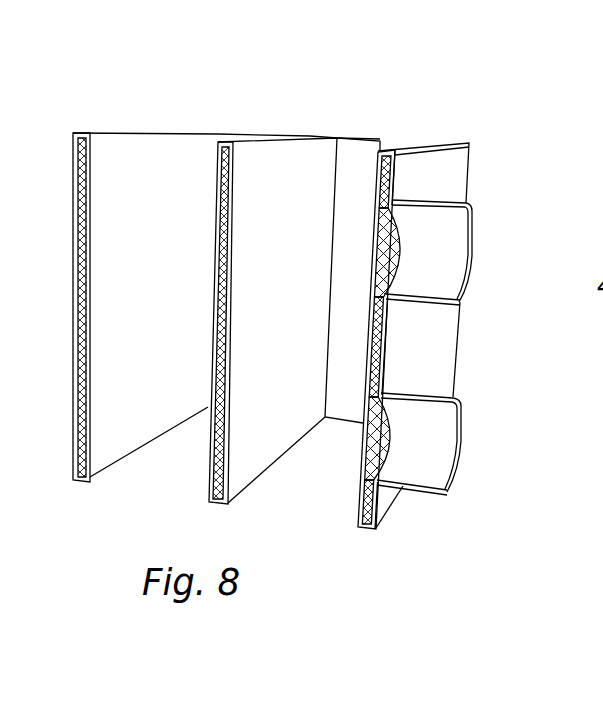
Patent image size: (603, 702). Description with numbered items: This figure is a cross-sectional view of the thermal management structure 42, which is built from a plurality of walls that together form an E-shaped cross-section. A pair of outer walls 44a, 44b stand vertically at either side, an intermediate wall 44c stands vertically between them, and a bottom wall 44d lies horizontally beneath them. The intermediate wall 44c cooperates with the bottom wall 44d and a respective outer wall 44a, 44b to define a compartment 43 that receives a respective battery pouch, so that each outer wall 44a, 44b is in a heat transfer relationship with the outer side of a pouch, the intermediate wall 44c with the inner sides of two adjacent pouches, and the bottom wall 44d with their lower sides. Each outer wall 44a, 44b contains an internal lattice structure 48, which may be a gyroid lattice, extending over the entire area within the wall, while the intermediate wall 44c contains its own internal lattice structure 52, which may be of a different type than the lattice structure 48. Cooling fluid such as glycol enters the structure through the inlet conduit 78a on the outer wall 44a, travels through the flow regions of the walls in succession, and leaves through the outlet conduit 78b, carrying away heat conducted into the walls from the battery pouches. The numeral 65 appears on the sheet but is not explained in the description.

The thermal management structure 42 is at (193, 73).
The compartment 43 is at (278, 493).
The outer wall 44a is at (453, 170).
The outer wall 44b is at (148, 160).
The intermediate wall 44c is at (278, 162).
The bottom wall 44d is at (358, 158).
The lattice structure 48 is at (80, 160).
The lattice structure 52 is at (222, 155).
The inlet conduit 78a is at (430, 453).
The outlet conduit 78b is at (440, 253).
The element 65 is at (592, 678).